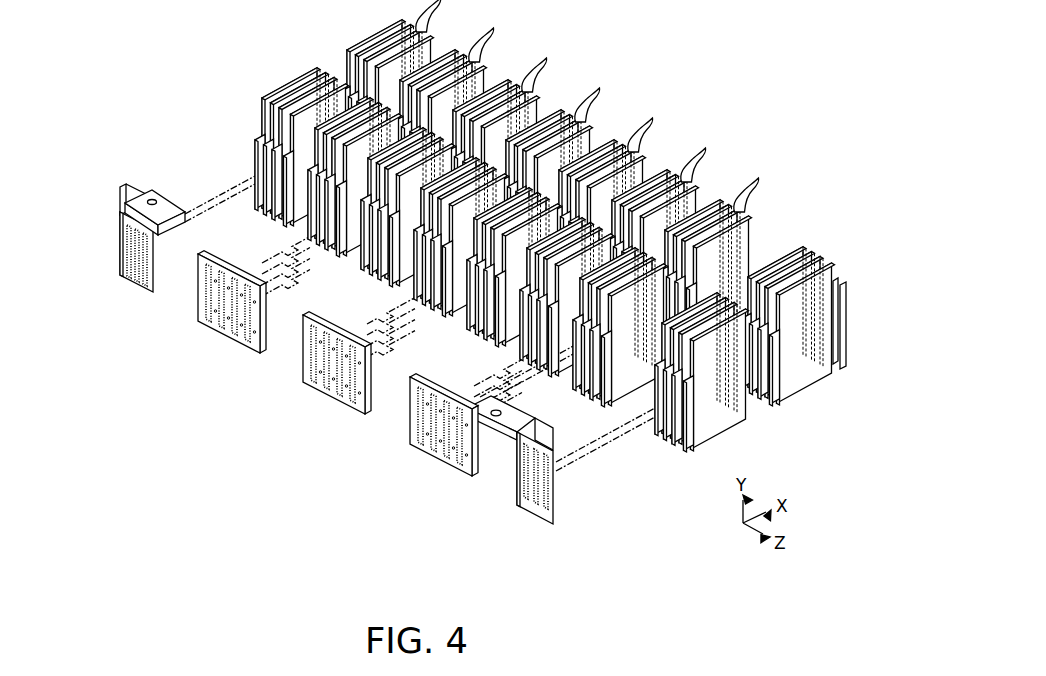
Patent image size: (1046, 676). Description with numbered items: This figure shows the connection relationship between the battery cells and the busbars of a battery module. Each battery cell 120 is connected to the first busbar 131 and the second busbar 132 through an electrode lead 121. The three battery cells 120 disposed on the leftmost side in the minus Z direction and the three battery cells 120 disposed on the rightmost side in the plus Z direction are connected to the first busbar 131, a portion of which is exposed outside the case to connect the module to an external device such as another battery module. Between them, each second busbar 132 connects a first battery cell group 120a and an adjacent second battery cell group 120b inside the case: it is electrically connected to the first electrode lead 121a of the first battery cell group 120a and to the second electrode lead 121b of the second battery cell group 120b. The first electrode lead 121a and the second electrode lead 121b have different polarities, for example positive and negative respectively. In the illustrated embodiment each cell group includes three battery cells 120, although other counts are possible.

The battery cell 120 is at (316, 62).
The first battery cell group 120a is at (546, 60).
The second battery cell group 120b is at (493, 31).
The electrode lead 121 is at (252, 151).
The first electrode lead 121a is at (299, 325).
The second electrode lead 121b is at (300, 203).
The first busbar 131 is at (114, 294).
The second busbar 132 is at (218, 351).